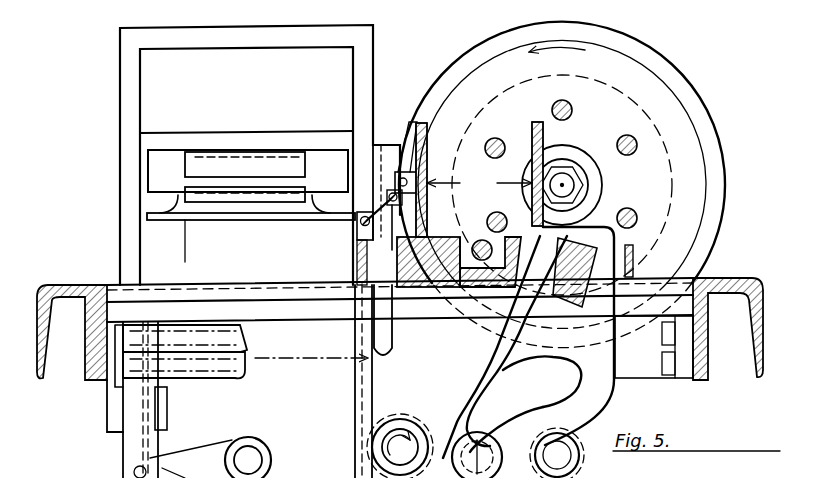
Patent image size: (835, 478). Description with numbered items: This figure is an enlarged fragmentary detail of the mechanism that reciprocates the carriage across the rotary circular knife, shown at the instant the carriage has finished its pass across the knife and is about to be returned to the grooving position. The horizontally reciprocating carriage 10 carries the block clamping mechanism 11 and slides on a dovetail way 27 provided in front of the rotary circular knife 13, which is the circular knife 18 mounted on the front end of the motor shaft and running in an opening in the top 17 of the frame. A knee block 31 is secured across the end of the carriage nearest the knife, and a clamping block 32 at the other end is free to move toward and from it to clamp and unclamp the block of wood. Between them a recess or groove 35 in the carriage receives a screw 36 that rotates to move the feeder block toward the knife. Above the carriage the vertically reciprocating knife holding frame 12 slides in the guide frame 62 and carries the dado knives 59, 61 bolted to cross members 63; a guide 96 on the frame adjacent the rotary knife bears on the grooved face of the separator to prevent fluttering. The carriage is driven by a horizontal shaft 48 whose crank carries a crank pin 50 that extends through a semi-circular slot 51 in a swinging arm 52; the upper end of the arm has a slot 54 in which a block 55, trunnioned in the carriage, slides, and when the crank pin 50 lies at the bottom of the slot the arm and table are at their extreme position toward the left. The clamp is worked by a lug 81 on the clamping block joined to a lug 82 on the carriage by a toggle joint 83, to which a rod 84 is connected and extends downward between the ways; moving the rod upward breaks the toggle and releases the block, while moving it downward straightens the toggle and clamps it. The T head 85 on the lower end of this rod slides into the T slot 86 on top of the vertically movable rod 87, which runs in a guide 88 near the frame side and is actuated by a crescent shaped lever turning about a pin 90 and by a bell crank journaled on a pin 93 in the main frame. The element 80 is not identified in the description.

The horizontally reciprocating carriage 10 is at (441, 252).
The block clamping mechanism 11 is at (479, 184).
The vertically reciprocating knife holding frame 12 is at (207, 168).
The rotary circular knife 13 is at (622, 65).
The top 17 is at (57, 287).
The circular knife 18 is at (718, 135).
The way 27 is at (140, 297).
The knee block 31 is at (545, 136).
The clamping block 32 is at (427, 128).
The recess or groove 35 is at (490, 242).
The screw 36 is at (477, 262).
The horizontal shaft 48 is at (400, 446).
The crank pin 50 is at (468, 448).
The semi-circular slot 51 is at (538, 373).
The swinging arm 52 is at (614, 393).
The slot 54 is at (623, 277).
The block 55 is at (582, 250).
The dado knife 59 is at (205, 198).
The dado knife 61 is at (205, 165).
The guide frame 62 is at (120, 62).
The cross member 63 is at (203, 145).
The plate 80 is at (215, 243).
The lug 81 is at (413, 122).
The lug 82 is at (357, 222).
The toggle joint 83 is at (393, 185).
The rod 84 is at (385, 330).
The T head 85 is at (378, 348).
The T slot 86 is at (190, 362).
The vertically movable rod 87 is at (138, 440).
The guide 88 is at (115, 411).
The pin 90 is at (560, 454).
The pin 93 is at (248, 455).
The guide 96 is at (392, 153).